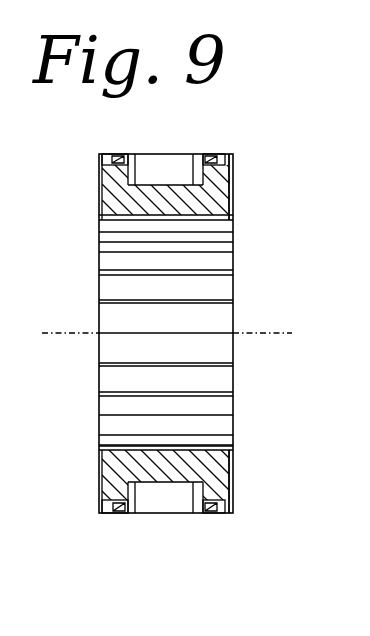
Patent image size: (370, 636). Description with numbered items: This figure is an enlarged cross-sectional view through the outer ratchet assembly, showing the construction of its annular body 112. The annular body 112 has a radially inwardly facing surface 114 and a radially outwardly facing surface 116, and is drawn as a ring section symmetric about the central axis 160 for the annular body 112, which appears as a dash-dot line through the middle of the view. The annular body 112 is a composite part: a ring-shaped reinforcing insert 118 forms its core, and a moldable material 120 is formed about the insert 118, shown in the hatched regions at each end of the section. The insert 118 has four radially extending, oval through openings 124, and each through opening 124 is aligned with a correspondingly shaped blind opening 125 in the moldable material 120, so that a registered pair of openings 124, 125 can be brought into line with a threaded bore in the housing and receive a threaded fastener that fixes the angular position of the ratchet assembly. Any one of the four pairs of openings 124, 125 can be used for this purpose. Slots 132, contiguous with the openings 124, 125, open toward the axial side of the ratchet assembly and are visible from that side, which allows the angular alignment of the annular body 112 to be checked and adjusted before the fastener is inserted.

The annular body 112 is at (233, 204).
The radially inwardly facing surface 114 is at (172, 222).
The radially outwardly facing surface 116 is at (206, 161).
The ring-shaped reinforcing insert 118 is at (123, 513).
The moldable material 120 is at (120, 467).
The through openings 124 is at (135, 160).
The blind openings 125 is at (163, 183).
The slots 132 is at (230, 157).
The central axis 160 is at (280, 333).